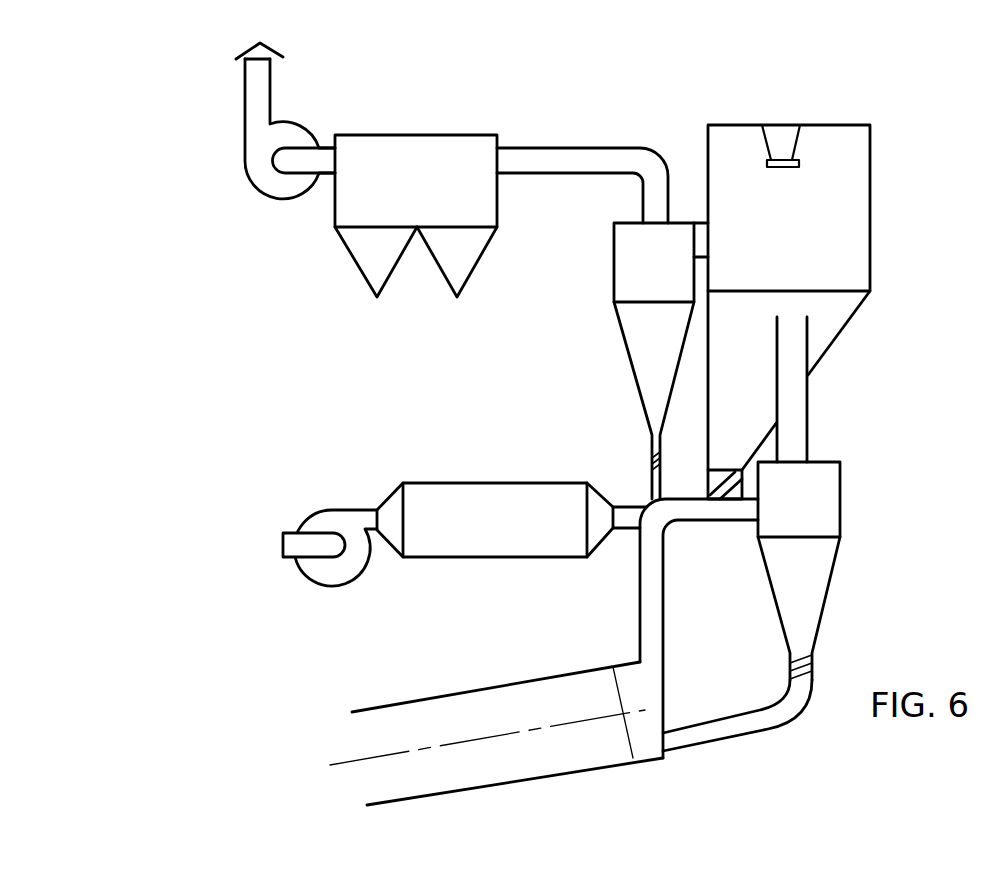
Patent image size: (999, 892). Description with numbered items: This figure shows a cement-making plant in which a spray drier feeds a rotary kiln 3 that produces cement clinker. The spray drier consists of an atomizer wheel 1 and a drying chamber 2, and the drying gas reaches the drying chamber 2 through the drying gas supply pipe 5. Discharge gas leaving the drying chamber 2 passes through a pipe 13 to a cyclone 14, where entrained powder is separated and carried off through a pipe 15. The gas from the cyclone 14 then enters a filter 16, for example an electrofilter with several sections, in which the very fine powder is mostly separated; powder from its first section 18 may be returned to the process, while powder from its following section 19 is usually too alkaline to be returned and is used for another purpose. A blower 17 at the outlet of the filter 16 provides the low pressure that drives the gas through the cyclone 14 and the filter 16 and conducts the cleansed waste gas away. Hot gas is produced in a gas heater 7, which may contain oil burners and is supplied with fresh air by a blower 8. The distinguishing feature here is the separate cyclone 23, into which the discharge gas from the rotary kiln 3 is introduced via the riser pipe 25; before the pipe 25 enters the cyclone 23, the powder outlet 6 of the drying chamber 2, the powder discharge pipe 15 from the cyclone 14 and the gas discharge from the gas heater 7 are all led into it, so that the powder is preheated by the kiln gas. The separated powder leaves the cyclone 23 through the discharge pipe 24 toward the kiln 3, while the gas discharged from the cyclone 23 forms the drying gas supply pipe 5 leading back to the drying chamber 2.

The atomizer wheel 1 is at (790, 131).
The drying chamber 2 is at (860, 229).
The rotary kiln 3 is at (497, 692).
The drying gas supply pipe 5 is at (808, 395).
The powder outlet 6 is at (712, 489).
The gas heater 7 is at (506, 492).
The blower 8 is at (358, 516).
The pipe 13 is at (703, 228).
The cyclone 14 is at (636, 361).
The pipe 15 is at (652, 456).
The filter 16 is at (470, 140).
The blower 17 is at (250, 168).
The first filter section 18 is at (443, 262).
The following filter section 19 is at (364, 266).
The cyclone 23 is at (832, 511).
The discharge pipe 24 is at (755, 718).
The riser pipe 25 is at (657, 600).